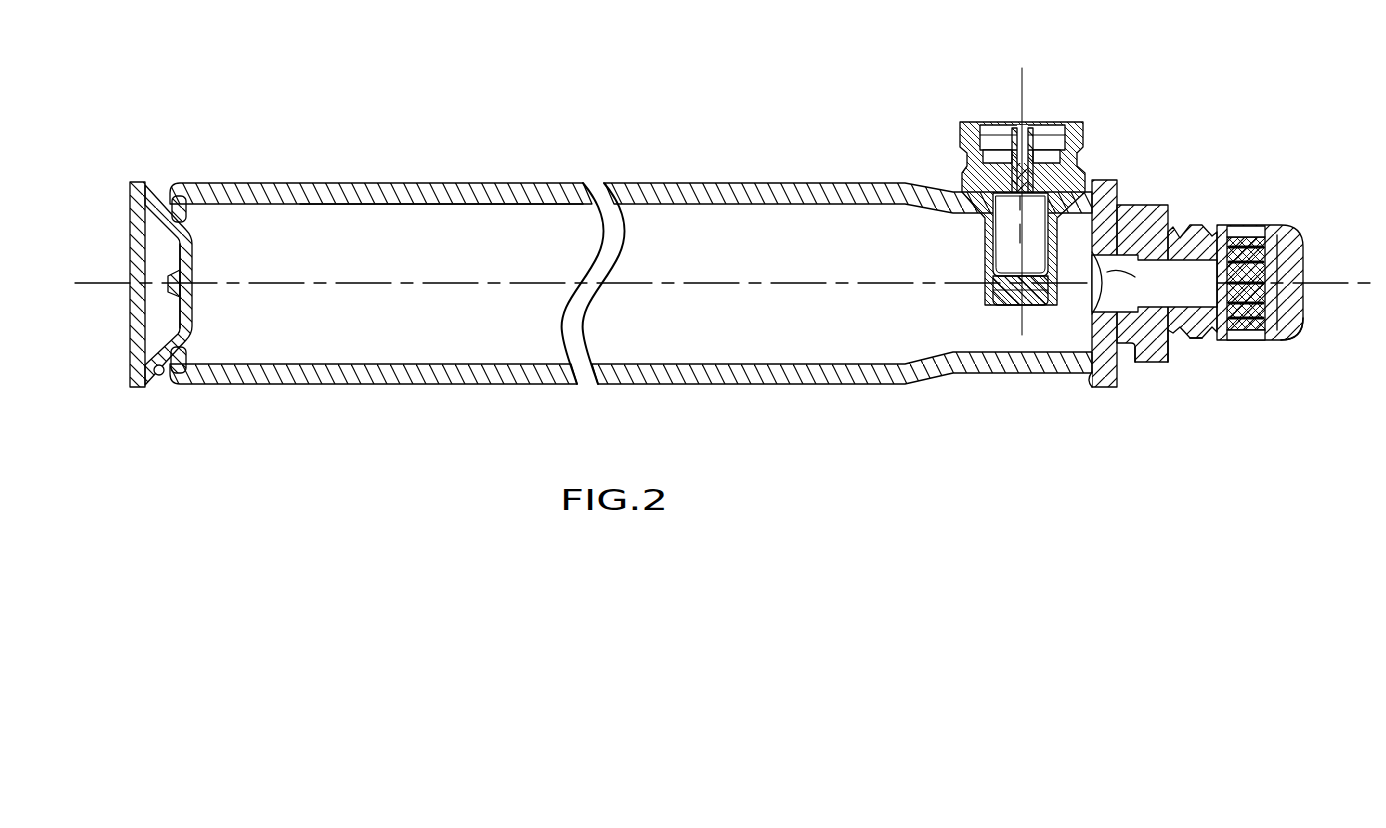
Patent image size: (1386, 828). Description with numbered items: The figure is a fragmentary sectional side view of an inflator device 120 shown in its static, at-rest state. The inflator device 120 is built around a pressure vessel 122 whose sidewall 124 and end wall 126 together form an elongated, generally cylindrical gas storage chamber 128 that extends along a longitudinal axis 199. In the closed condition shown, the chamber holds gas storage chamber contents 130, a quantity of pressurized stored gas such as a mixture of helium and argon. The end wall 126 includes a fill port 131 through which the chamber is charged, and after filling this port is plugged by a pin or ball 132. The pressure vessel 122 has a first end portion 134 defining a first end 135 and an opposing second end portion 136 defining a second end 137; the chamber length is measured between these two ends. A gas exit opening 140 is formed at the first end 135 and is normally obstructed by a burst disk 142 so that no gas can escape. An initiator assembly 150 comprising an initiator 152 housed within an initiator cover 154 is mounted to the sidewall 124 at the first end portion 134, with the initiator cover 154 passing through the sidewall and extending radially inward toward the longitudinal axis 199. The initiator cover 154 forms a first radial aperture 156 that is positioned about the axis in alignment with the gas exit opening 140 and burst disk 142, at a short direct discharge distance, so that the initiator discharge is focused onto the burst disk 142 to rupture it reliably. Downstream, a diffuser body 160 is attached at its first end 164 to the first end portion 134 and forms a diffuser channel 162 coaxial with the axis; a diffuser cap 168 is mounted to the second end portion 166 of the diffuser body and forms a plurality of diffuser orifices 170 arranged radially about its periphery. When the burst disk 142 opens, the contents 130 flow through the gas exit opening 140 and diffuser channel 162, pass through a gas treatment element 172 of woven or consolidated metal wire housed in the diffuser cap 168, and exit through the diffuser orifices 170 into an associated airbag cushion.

The inflator device 120 is at (727, 240).
The pressure vessel 122 is at (631, 281).
The sidewall 124 is at (288, 190).
The end wall 126 is at (178, 283).
The gas storage chamber 128 is at (492, 225).
The gas storage chamber contents 130 is at (390, 332).
The fill port 131 is at (191, 276).
The pin or ball 132 is at (166, 287).
The first end portion 134 is at (1002, 368).
The first end 135 is at (1103, 387).
The second end portion 136 is at (173, 377).
The second end 137 is at (185, 382).
The gas exit opening 140 is at (1181, 312).
The burst disk 142 is at (1154, 283).
The initiator assembly 150 is at (1006, 173).
The initiator 152 is at (1082, 193).
The initiator cover 154 is at (960, 143).
The first radial aperture 156 is at (1060, 277).
The diffuser body 160 is at (1170, 355).
The diffuser channel 162 is at (1184, 242).
The first end 164 is at (1137, 360).
The second end portion 166 is at (1207, 323).
The diffuser cap 168 is at (1290, 330).
The diffuser orifices 170 is at (1290, 288).
The gas treatment element 172 is at (1303, 262).
The longitudinal axis 199 is at (682, 283).